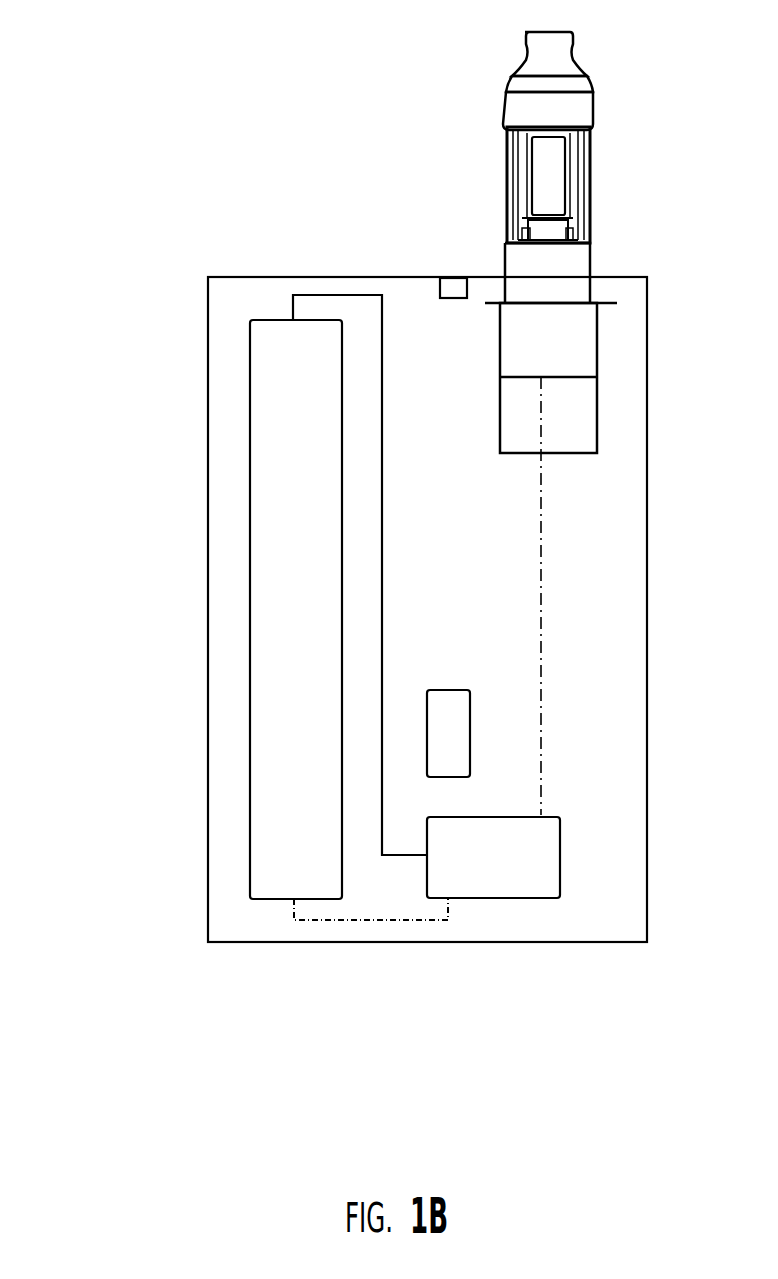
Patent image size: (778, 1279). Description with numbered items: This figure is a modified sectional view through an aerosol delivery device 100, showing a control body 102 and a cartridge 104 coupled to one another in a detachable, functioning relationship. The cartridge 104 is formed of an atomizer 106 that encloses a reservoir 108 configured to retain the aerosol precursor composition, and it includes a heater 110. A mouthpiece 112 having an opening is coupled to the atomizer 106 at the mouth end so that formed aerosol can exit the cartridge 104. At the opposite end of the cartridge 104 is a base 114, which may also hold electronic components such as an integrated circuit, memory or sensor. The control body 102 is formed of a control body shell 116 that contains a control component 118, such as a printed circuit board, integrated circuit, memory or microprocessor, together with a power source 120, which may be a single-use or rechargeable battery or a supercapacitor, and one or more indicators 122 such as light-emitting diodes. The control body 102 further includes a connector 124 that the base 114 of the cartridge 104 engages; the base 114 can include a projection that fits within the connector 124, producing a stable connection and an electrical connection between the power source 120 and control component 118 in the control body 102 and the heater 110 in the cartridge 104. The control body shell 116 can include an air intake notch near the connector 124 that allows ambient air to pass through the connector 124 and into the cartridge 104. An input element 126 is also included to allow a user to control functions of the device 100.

The aerosol delivery device 100 is at (108, 92).
The control body 102 is at (483, 613).
The cartridge 104 is at (603, 110).
The atomizer 106 is at (588, 175).
The reservoir 108 is at (522, 157).
The heater 110 is at (530, 202).
The mouthpiece 112 is at (568, 53).
The base 114 is at (566, 350).
The control body shell 116 is at (647, 691).
The control component 118 is at (523, 882).
The power source 120 is at (315, 668).
The indicator 122 is at (450, 278).
The connector 124 is at (499, 420).
The input element 126 is at (447, 690).